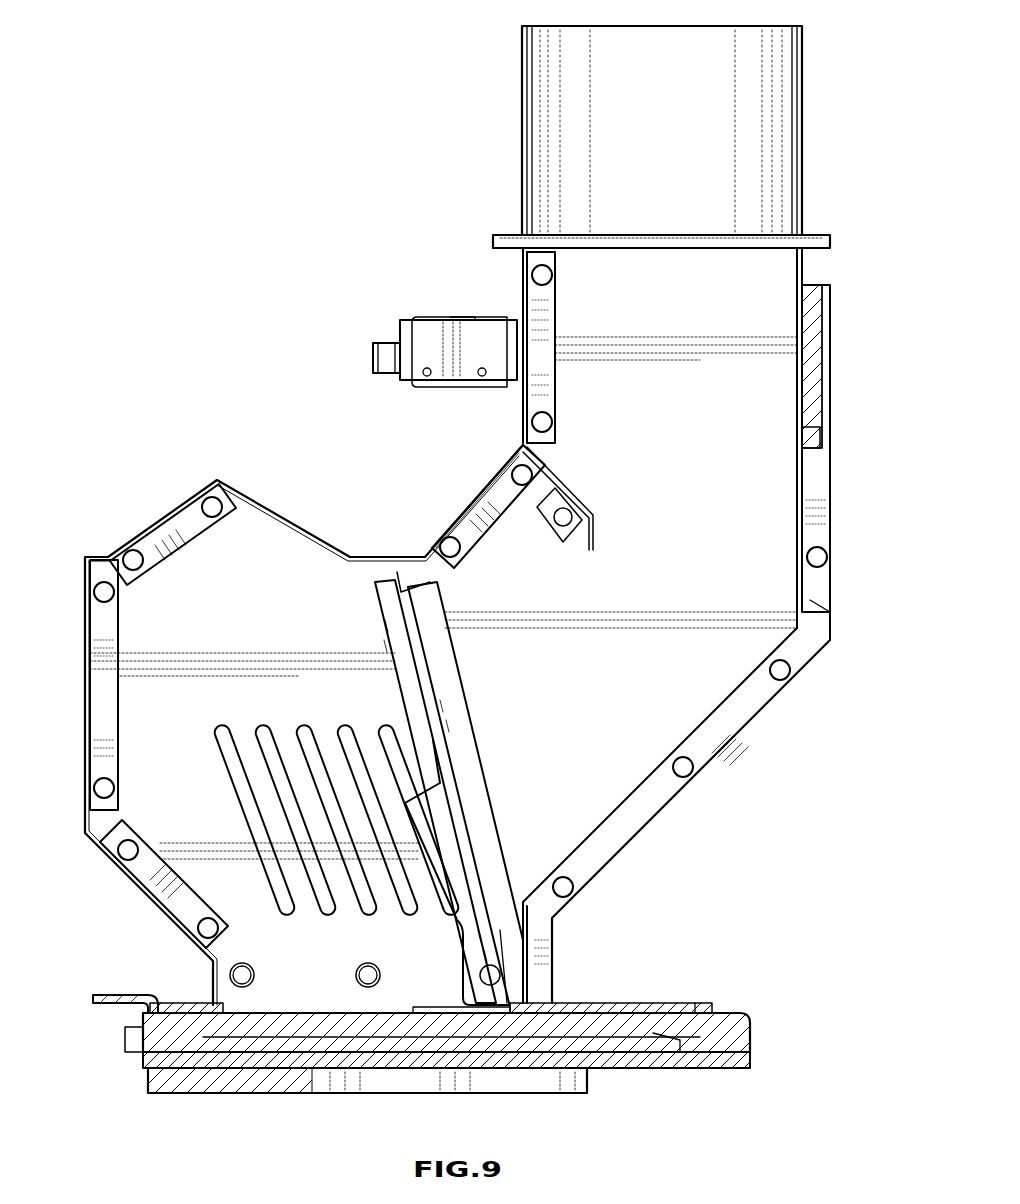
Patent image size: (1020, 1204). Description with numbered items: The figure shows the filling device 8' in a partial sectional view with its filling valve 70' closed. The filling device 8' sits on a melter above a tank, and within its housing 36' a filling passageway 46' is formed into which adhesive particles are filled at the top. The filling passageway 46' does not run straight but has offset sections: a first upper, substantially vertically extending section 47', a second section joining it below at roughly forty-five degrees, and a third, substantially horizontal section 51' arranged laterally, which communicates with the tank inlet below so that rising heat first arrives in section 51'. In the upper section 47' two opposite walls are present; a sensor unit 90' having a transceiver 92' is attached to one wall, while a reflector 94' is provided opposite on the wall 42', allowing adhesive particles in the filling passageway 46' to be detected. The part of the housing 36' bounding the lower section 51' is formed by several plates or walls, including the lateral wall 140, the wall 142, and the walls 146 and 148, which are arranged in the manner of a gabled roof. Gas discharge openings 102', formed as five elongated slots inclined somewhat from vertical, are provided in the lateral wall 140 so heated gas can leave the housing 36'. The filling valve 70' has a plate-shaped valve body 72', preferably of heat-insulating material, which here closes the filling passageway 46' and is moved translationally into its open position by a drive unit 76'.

The filling device 8' is at (479, 137).
The upper section 47' is at (662, 438).
The filling passageway 46' is at (621, 807).
The reflector 94' is at (855, 366).
The wall 42' is at (857, 462).
The housing 36' is at (699, 801).
The sensor unit 90' is at (407, 319).
The transceiver 92' is at (346, 373).
The wall 148 is at (241, 481).
The wall 146 is at (122, 543).
The horizontal section 51' is at (125, 781).
The wall 142 is at (85, 697).
The lateral wall 140 is at (135, 812).
The filling valve 70' is at (300, 741).
The gas discharge openings 102' is at (337, 937).
The valve body 72' is at (433, 749).
The drive unit 76' is at (611, 975).